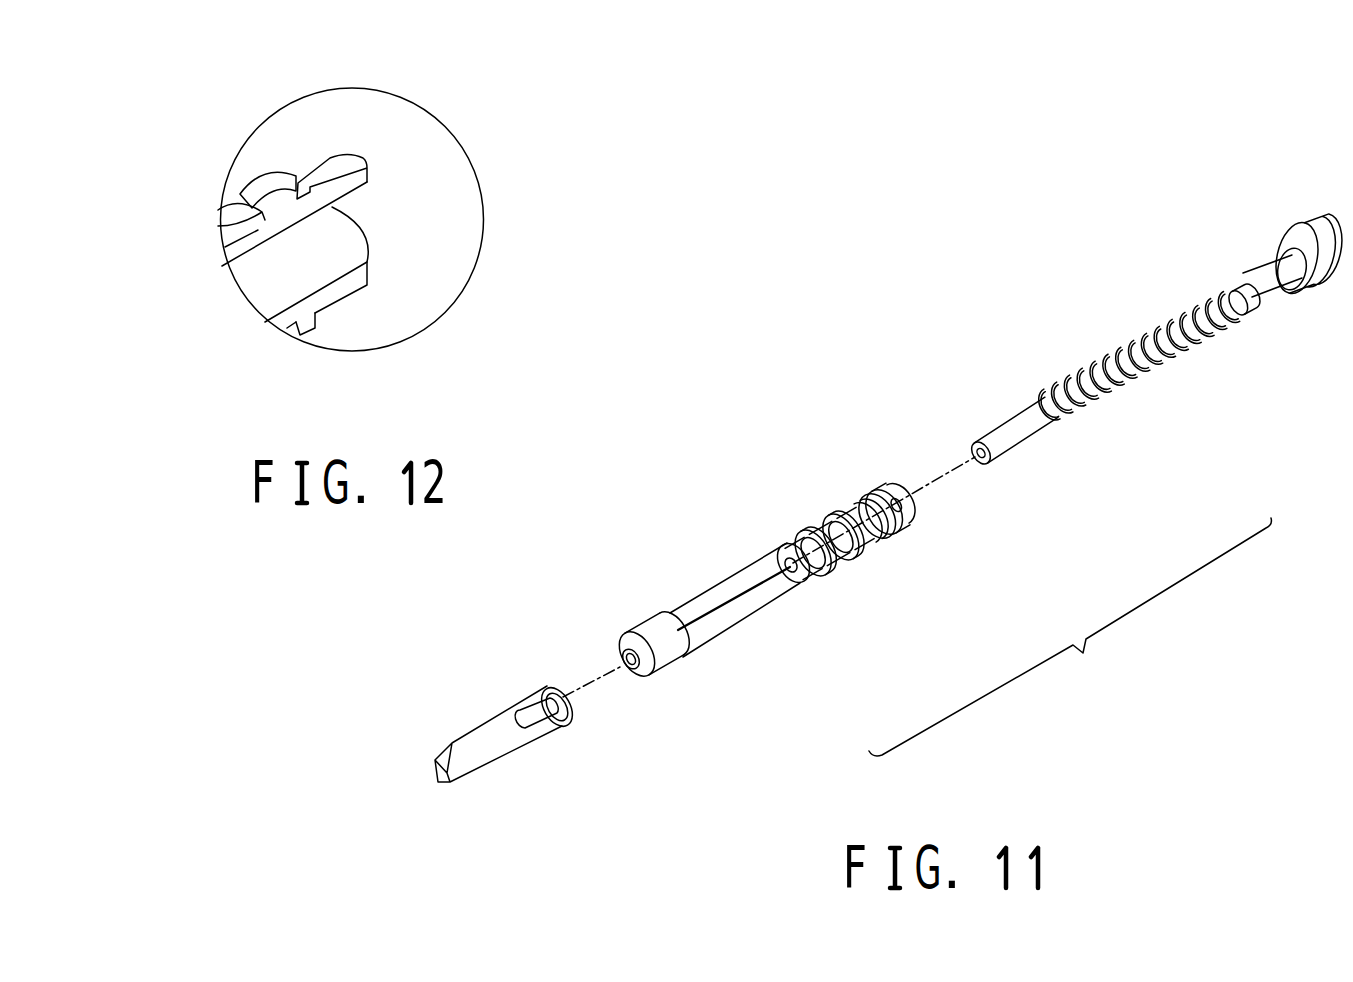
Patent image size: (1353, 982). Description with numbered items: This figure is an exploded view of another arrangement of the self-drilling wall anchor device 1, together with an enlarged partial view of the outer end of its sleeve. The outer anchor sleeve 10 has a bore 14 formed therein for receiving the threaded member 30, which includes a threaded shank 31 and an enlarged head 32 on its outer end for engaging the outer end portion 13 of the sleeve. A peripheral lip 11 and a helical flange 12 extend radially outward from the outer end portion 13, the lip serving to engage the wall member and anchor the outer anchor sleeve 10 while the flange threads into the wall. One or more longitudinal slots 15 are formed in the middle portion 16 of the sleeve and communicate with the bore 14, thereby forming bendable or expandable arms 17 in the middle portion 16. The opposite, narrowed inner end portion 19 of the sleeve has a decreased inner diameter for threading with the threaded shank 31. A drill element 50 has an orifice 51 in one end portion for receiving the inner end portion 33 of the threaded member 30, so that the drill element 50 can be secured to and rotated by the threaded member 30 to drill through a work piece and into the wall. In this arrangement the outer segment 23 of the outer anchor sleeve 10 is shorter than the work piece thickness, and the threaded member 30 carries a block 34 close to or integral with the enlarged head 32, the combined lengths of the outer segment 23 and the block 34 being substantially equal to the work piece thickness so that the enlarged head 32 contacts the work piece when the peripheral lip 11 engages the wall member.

In FIG. 11, the self-drilling wall anchor device 1 is at (920, 326).
In FIG. 12, the outer anchor sleeve 10 is at (360, 315).
In FIG. 11, the outer anchor sleeve 10 is at (645, 627).
In FIG. 12, the peripheral lip 11 is at (307, 331).
In FIG. 11, the peripheral lip 11 is at (866, 496).
In FIG. 12, the helical flange 12 is at (230, 212).
In FIG. 11, the helical flange 12 is at (810, 522).
In FIG. 12, the outer end portion 13 is at (257, 164).
In FIG. 11, the outer end portion 13 is at (902, 539).
In FIG. 12, the bore 14 is at (267, 285).
In FIG. 11, the bore 14 is at (634, 674).
In FIG. 11, the longitudinal slot 15 is at (731, 607).
In FIG. 11, the middle portion 16 is at (797, 588).
In FIG. 11, the arm 17 is at (713, 590).
In FIG. 11, the inner end portion 19 is at (673, 676).
In FIG. 12, the outer segment 23 is at (328, 167).
In FIG. 11, the outer segment 23 is at (893, 490).
In FIG. 11, the threaded member 30 is at (1207, 291).
In FIG. 11, the threaded shank 31 is at (1118, 355).
In FIG. 11, the enlarged head 32 is at (1302, 223).
In FIG. 11, the inner end portion 33 is at (1018, 437).
In FIG. 11, the block 34 is at (1307, 288).
In FIG. 11, the drill element 50 is at (473, 722).
In FIG. 11, the orifice 51 is at (532, 705).